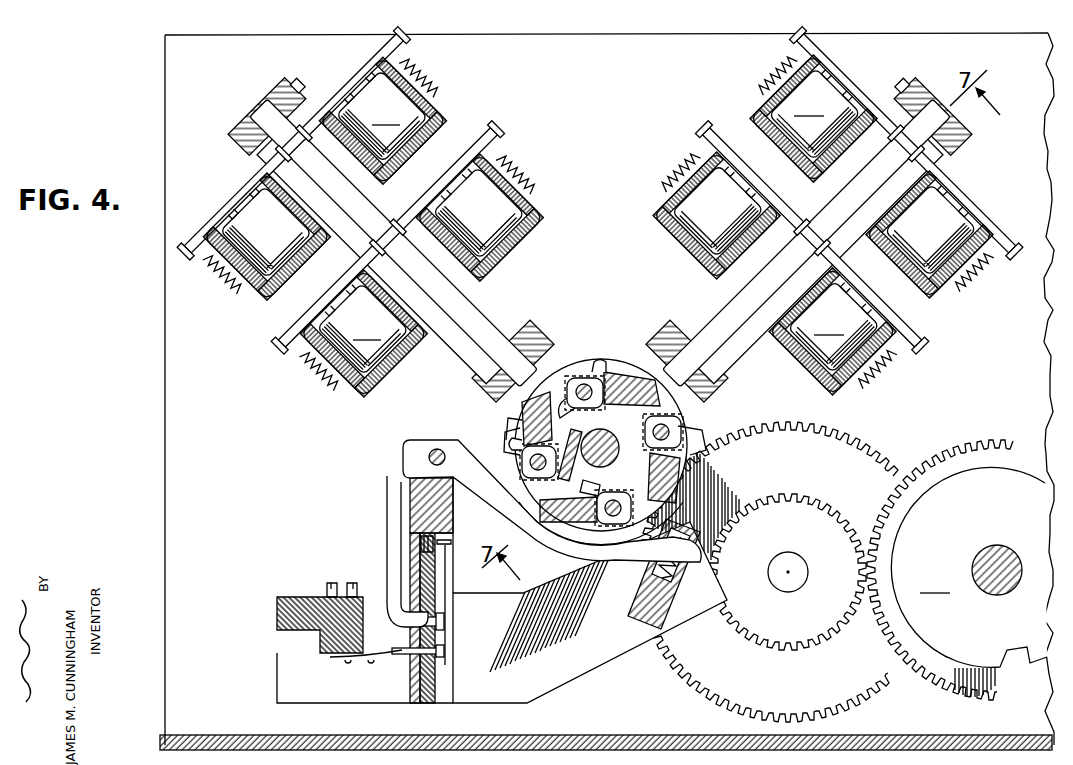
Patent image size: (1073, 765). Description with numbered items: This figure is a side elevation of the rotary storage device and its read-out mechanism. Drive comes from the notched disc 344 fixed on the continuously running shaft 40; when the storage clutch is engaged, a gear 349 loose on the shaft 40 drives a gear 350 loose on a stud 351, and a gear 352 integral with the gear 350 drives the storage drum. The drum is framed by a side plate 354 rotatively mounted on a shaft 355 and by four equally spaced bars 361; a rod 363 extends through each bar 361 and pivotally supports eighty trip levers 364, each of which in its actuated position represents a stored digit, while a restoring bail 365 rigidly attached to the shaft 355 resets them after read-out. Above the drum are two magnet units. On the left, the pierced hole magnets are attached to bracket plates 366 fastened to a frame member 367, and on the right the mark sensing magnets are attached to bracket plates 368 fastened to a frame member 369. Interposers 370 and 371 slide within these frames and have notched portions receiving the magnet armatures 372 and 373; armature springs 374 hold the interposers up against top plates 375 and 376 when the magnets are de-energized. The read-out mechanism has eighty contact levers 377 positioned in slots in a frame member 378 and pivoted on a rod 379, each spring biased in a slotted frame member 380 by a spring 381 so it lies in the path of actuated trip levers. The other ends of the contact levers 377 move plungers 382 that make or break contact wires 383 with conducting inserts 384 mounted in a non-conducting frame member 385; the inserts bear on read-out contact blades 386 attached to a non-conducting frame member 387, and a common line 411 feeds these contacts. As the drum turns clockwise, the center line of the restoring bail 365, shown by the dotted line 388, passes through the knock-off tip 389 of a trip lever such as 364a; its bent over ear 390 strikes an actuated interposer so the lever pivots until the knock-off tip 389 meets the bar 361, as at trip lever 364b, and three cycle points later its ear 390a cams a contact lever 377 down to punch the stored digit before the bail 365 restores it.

The continuously running shaft 40 is at (1023, 565).
The notched disc 344 is at (969, 582).
The gear 349 is at (905, 678).
The gear 350 is at (740, 645).
The stud 351 is at (790, 552).
The gear 352 is at (668, 690).
The side plate 354 is at (676, 425).
The shaft 355 is at (606, 436).
The bars 361 is at (515, 413).
The rod 363 is at (582, 382).
The trip levers 364 is at (600, 365).
The trip lever 364a is at (512, 443).
The trip lever 364b is at (613, 524).
The restoring bail 365 is at (577, 440).
The bracket plates 366 is at (440, 110).
The frame member 367 is at (297, 83).
The bracket plates 368 is at (747, 110).
The frame member 369 is at (962, 152).
The interposers 370 is at (493, 325).
The interposers 371 is at (722, 318).
The magnet armature 372 is at (393, 228).
The magnet armature 373 is at (787, 212).
The armature springs 374 is at (294, 380).
The top plate 375 is at (243, 100).
The top plate 376 is at (966, 130).
The contact levers 377 is at (385, 535).
The frame member 378 is at (455, 505).
The rod 379 is at (430, 452).
The slotted frame member 380 is at (632, 615).
The spring 381 is at (655, 565).
The plungers 382 is at (446, 624).
The contact wires 383 is at (447, 617).
The conducting inserts 384 is at (400, 656).
The non-conducting frame member 385 is at (418, 700).
The read-out contact blades 386 is at (385, 655).
The non-conducting frame member 387 is at (300, 598).
The dotted line 388 is at (530, 468).
The knock-off tip 389 is at (600, 488).
The bent over ear 390 is at (700, 432).
The ear 390a is at (518, 428).
The common line 411 is at (448, 575).